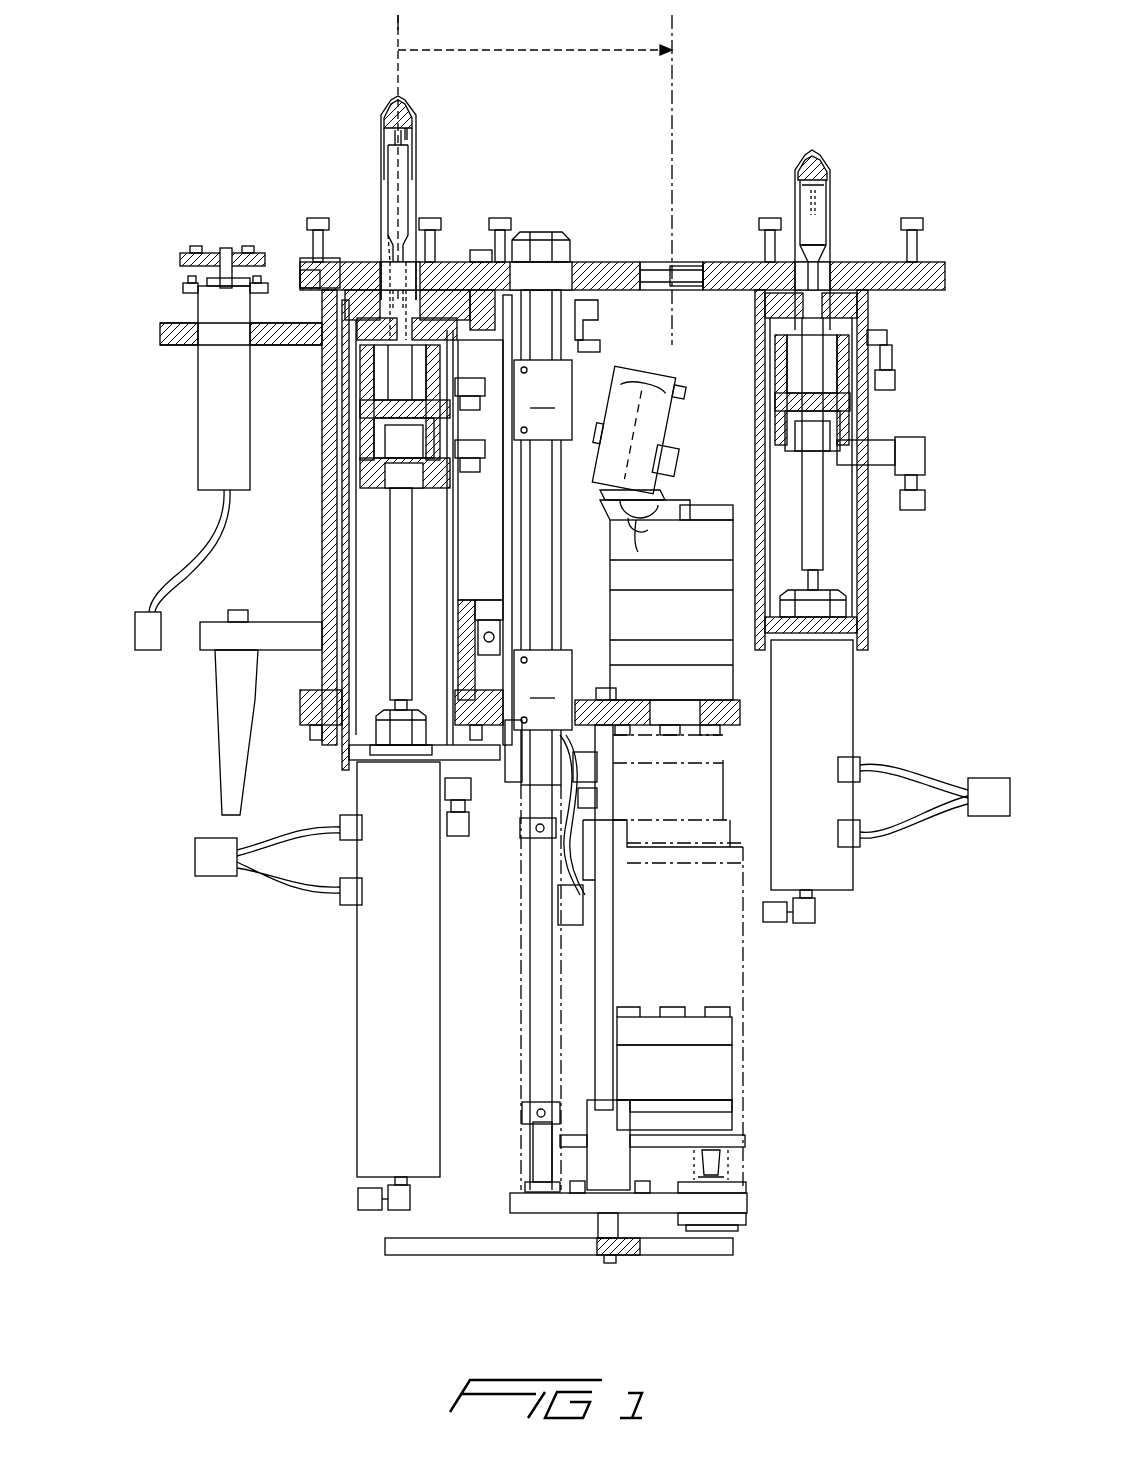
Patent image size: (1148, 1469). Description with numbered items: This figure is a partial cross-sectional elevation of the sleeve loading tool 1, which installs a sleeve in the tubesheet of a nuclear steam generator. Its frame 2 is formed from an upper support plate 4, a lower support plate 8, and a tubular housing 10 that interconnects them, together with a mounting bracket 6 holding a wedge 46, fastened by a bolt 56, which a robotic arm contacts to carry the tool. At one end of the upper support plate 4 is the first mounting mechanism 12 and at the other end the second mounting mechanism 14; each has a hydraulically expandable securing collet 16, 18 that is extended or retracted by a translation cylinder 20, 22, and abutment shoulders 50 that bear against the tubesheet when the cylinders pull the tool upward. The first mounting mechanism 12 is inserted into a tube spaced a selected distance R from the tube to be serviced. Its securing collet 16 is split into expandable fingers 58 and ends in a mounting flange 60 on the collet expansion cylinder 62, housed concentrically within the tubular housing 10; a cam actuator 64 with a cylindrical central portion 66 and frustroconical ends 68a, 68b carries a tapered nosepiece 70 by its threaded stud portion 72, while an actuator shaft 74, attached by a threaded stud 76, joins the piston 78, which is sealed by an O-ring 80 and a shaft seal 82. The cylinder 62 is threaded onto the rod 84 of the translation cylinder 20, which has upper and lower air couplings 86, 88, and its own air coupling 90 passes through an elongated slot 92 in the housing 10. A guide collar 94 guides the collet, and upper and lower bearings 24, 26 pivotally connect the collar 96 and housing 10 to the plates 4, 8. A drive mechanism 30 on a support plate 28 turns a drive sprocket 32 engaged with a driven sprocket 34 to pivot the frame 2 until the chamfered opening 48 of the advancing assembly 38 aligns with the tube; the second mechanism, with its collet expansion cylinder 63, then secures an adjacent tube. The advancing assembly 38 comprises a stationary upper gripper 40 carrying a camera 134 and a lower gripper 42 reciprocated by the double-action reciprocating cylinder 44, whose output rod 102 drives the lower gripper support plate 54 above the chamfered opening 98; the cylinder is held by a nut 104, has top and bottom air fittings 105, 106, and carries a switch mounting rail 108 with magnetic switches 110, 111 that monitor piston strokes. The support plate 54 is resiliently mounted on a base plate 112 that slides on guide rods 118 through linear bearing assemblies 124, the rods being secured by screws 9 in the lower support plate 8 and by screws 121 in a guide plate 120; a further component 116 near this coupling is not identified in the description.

The sleeve loading tool 1 is at (268, 975).
The frame 2 is at (300, 515).
The upper support plate 4 is at (610, 262).
The mounting bracket 6 is at (305, 622).
The lower support plate 8 is at (740, 712).
The screws 9 is at (604, 688).
The tubular housing 10 is at (328, 462).
The first mounting mechanism 12 is at (343, 122).
The second mounting mechanism 14 is at (833, 215).
The securing collet 16 is at (417, 185).
The securing collet 18 is at (797, 195).
The translation cylinder 20 is at (357, 998).
The translation cylinder 22 is at (853, 868).
The upper bearing 24 is at (303, 258).
The lower bearing 26 is at (328, 692).
The support plate 28 is at (176, 324).
The drive mechanism 30 is at (212, 400).
The drive sprocket 32 is at (186, 258).
The driven sprocket 34 is at (305, 262).
The advancing assembly 38 is at (760, 955).
The upper gripper 40 is at (728, 500).
The lower gripper 42 is at (735, 1068).
The reciprocating cylinder 44 is at (561, 478).
The wedge 46 is at (228, 716).
The chamfered opening 48 is at (712, 266).
The abutment shoulders 50 is at (316, 218).
The lower gripper support plate 54 is at (745, 1142).
The bolt 56 is at (232, 610).
The expandable fingers 58 is at (413, 120).
The mounting flange 60 is at (452, 295).
The collet expansion cylinder 62 is at (362, 352).
The collet expansion cylinder 63 is at (756, 340).
The cam actuator 64 is at (383, 150).
The cylindrical central portion 66 is at (390, 178).
The top frustroconical end 68a is at (409, 142).
The bottom frustroconical end 68b is at (388, 238).
The tapered nosepiece 70 is at (402, 96).
The threaded stud portion 72 is at (381, 125).
The actuator shaft 74 is at (376, 372).
The threaded stud 76 is at (392, 268).
The piston 78 is at (440, 412).
The O-ring 80 is at (436, 438).
The shaft seal 82 is at (486, 378).
The rod 84 is at (390, 565).
The upper air coupling 86 is at (472, 785).
The lower air coupling 88 is at (372, 1208).
The air coupling 90 is at (451, 480).
The elongated slot 92 is at (452, 530).
The guide collar 94 is at (357, 315).
The collar 96 is at (478, 262).
The chamfered opening 98 is at (700, 728).
The output rod 102 is at (532, 1145).
The nut 104 is at (545, 240).
The top air fitting 105 is at (600, 312).
The bottom air fitting 106 is at (540, 830).
The switch mounting rail 108 is at (545, 758).
The magnetic switch 110 is at (543, 690).
The magnetic switch 111 is at (543, 400).
The base plate 112 is at (748, 1202).
The coupling 116 is at (726, 1158).
The guide rods 118 is at (614, 930).
The guide plate 120 is at (733, 1245).
The screws 121 is at (610, 1263).
The linear bearing assemblies 124 is at (600, 1105).
The camera 134 is at (680, 405).
The selected distance R is at (547, 48).